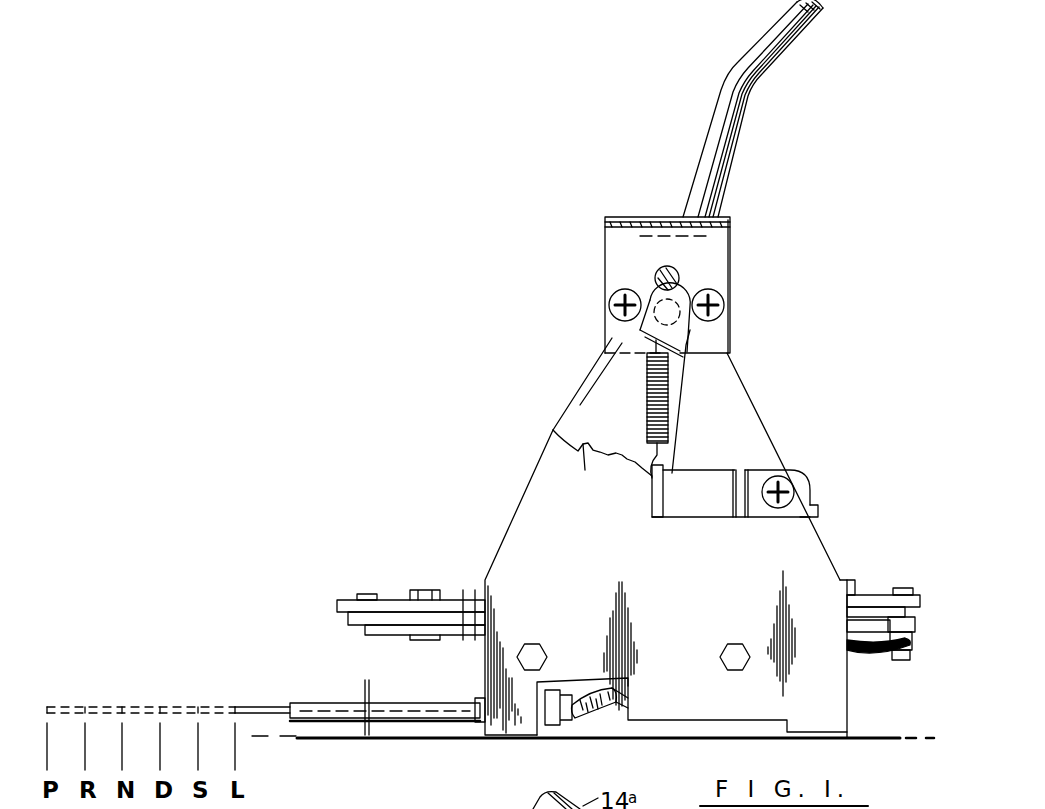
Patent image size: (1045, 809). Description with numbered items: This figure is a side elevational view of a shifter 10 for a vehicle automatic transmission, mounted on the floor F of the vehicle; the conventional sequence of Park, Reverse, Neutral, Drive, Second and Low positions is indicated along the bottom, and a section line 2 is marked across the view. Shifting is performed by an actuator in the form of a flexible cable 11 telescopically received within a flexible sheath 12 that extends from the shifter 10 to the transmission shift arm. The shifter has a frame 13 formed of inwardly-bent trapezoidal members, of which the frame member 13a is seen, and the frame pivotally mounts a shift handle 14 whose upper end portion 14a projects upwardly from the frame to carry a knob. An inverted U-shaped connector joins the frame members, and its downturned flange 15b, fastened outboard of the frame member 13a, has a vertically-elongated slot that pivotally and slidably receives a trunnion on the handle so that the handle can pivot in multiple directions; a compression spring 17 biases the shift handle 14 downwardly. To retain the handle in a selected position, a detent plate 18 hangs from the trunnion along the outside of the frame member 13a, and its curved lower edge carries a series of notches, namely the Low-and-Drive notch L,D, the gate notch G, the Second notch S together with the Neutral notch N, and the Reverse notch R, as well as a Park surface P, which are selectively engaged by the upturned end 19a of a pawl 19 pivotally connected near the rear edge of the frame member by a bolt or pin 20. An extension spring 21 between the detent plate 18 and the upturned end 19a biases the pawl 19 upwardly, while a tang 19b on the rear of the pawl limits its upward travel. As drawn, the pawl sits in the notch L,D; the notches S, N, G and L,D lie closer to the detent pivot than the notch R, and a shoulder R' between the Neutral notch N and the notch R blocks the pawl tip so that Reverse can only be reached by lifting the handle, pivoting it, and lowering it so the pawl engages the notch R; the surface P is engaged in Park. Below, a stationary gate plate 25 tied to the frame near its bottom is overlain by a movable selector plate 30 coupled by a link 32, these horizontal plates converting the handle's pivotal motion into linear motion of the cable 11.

The shifter 10 is at (558, 307).
The cable 11 is at (264, 707).
The flexible sheath 12 is at (305, 703).
The frame 13 is at (755, 442).
The frame member 13a is at (730, 405).
The shift handle 14 is at (712, 156).
The upper end portion 14a is at (762, 47).
The downturned flange 15b is at (712, 245).
The compression spring 17 is at (682, 270).
The detent plate 18 is at (588, 416).
The pawl 19 is at (715, 505).
The upturned end 19a is at (660, 490).
The tang 19b is at (820, 510).
The bolt or pin 20 is at (790, 492).
The extension spring 21 is at (665, 395).
The gate plate 25 is at (472, 628).
The selector plate 30 is at (372, 625).
The link 32 is at (400, 600).
The section line 2- 2 is at (403, 47).
The floor F is at (883, 737).
The surface P is at (558, 440).
The notch R is at (568, 474).
The shoulder R' is at (577, 507).
The notch S is at (598, 462).
The notch N is at (608, 458).
The notch G is at (628, 470).
The notch L,D is at (648, 492).